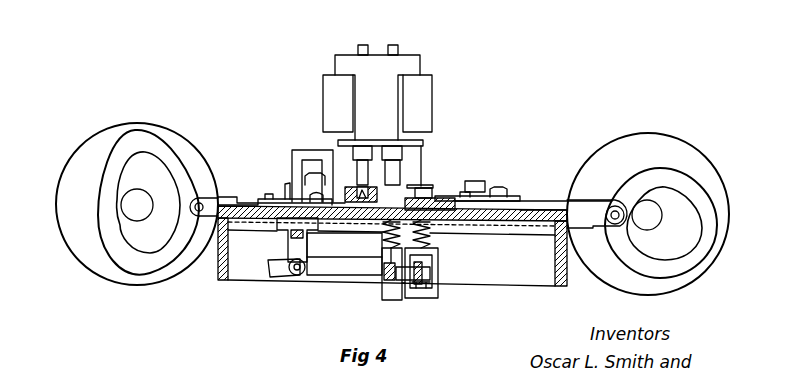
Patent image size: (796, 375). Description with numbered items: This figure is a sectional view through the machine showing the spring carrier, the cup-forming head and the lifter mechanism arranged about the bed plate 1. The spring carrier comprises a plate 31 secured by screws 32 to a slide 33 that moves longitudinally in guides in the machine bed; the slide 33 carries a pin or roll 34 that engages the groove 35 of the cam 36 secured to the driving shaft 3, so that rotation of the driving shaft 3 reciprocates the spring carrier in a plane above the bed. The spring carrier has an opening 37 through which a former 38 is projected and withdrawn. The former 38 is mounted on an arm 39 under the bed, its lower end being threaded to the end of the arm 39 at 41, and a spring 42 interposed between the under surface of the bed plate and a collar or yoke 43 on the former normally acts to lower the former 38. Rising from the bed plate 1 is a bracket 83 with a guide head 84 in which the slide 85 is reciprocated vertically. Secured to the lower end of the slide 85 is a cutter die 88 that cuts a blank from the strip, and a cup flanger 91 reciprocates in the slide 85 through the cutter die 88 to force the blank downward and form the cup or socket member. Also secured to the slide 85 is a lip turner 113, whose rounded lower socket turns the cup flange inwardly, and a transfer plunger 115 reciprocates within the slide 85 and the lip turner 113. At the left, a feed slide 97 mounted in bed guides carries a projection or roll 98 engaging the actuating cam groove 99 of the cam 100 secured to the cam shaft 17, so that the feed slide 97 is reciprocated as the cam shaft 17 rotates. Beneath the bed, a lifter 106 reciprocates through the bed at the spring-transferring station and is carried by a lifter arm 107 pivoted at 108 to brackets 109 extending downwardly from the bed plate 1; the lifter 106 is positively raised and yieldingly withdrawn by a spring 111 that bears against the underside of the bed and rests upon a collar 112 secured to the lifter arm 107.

The bed plate 1 is at (213, 272).
The driving shaft 3 is at (661, 213).
The cam shaft 17 is at (134, 208).
The plate 31 is at (420, 195).
The screws 32 is at (487, 195).
The slide 33 is at (527, 202).
The pin or roll 34 is at (612, 208).
The groove 35 is at (655, 176).
The cam 36 is at (627, 140).
The opening 37 is at (427, 198).
The former 38 is at (433, 203).
The arm 39 is at (404, 290).
The threaded connection 41 is at (432, 285).
The spring 42 is at (432, 238).
The collar or yoke 43 is at (438, 272).
The bracket 83 is at (445, 203).
The guide head 84 is at (428, 93).
The slide 85 is at (390, 68).
The cutter die 88 is at (350, 168).
The cup flanger 91 is at (362, 45).
The slide 97 is at (240, 201).
The projection or roll 98 is at (201, 198).
The cam groove 99 is at (158, 142).
The cam 100 is at (93, 143).
The lifter 106 is at (385, 230).
The lifter arm 107 is at (335, 268).
The pivot 108 is at (295, 270).
The brackets 109 is at (290, 243).
The spring 111 is at (386, 240).
The collar 112 is at (386, 290).
The lip turner 113 is at (413, 187).
The transfer plunger 115 is at (393, 45).